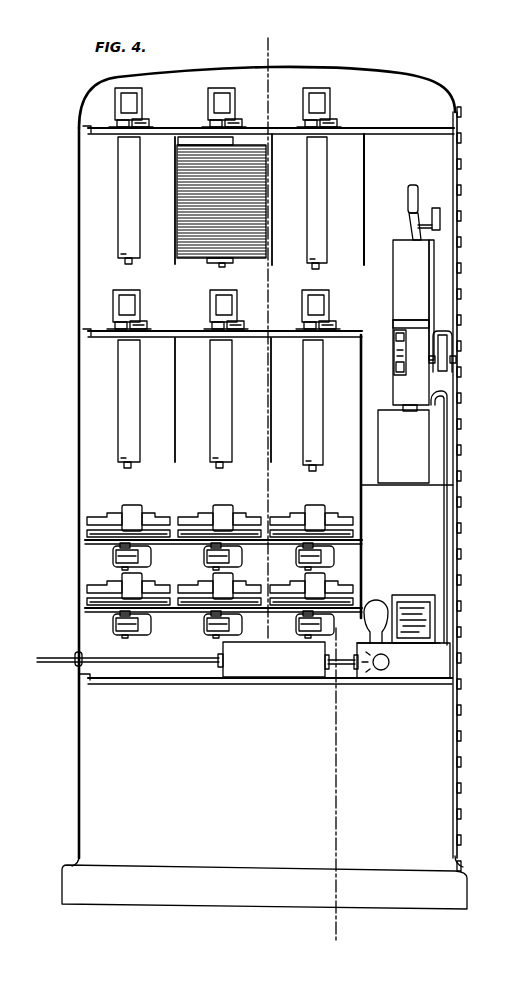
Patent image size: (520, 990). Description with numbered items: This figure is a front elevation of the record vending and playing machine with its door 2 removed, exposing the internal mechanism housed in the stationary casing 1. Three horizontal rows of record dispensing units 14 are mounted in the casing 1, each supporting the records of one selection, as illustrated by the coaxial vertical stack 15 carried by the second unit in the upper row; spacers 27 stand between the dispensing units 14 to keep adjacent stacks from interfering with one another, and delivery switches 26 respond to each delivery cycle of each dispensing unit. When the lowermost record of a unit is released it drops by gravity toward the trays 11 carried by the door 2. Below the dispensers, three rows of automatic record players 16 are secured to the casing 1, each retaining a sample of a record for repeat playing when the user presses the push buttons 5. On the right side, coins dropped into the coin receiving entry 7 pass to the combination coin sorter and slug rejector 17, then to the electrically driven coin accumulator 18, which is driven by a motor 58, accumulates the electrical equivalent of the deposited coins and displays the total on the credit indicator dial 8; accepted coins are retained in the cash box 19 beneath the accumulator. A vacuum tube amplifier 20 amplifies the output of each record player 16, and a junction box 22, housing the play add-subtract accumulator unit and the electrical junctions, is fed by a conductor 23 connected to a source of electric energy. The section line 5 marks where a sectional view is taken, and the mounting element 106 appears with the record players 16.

The stationary casing 1 is at (462, 278).
The door 2 is at (513, 658).
The push buttons 5 is at (250, 47).
The coin receiving entry 7 is at (421, 186).
The credit indicator dial 8 is at (393, 345).
The trays 11 is at (488, 489).
The record dispensing units 14 is at (240, 143).
The coaxial vertical stack 15 is at (203, 259).
The automatic record players 16 is at (143, 508).
The combination coin sorter and slug rejector 17 is at (433, 273).
The electrically driven coin accumulator 18 is at (422, 331).
The cash box 19 is at (417, 452).
The vacuum tube amplifier 20 is at (435, 660).
The junction box 22 is at (272, 663).
The conductor 23 is at (58, 660).
The delivery switches 26 is at (146, 122).
The spacers 27 is at (175, 213).
The motor 58 is at (450, 358).
The tray brackets 106 is at (113, 553).